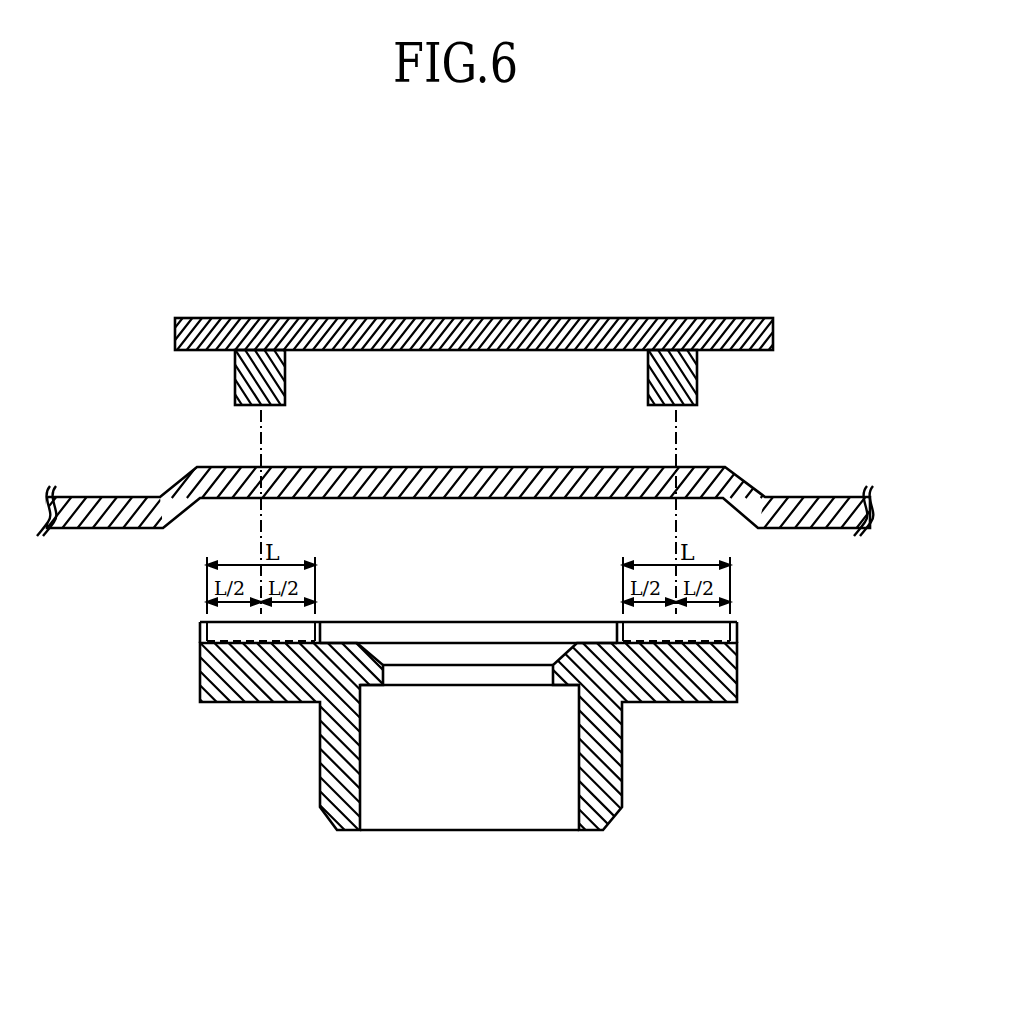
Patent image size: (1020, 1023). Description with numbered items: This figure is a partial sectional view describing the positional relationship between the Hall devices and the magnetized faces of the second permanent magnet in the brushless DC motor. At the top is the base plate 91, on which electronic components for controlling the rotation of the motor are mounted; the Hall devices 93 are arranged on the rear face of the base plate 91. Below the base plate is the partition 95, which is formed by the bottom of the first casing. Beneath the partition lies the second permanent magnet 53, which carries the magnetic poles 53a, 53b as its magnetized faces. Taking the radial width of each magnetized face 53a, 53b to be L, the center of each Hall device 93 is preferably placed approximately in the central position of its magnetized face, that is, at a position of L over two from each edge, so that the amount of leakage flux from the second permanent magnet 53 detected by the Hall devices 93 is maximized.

The base plate 91 is at (500, 318).
The Hall device 93 is at (234, 381).
The partition 95 is at (103, 496).
The second permanent magnet 53 is at (253, 702).
The magnetic pole 53a is at (207, 631).
The magnetic pole 53b is at (718, 630).